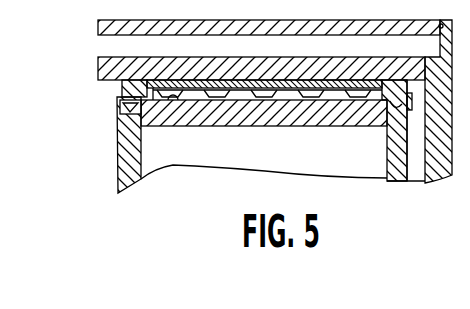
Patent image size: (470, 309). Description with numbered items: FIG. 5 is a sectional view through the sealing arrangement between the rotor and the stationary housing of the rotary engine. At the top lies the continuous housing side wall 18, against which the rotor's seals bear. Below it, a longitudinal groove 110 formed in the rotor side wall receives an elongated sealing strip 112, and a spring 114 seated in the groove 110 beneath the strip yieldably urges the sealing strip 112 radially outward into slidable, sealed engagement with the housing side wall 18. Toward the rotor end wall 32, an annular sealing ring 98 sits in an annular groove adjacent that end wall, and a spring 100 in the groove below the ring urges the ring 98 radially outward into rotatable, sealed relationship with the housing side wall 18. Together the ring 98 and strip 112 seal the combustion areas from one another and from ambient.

The housing side wall 18 is at (308, 60).
The sealing strip 112 is at (217, 78).
The annular sealing ring 98 is at (397, 100).
The spring 100 is at (387, 123).
The spring 114 is at (213, 96).
The longitudinal groove 110 is at (176, 103).
The rotor end wall 32 is at (384, 155).